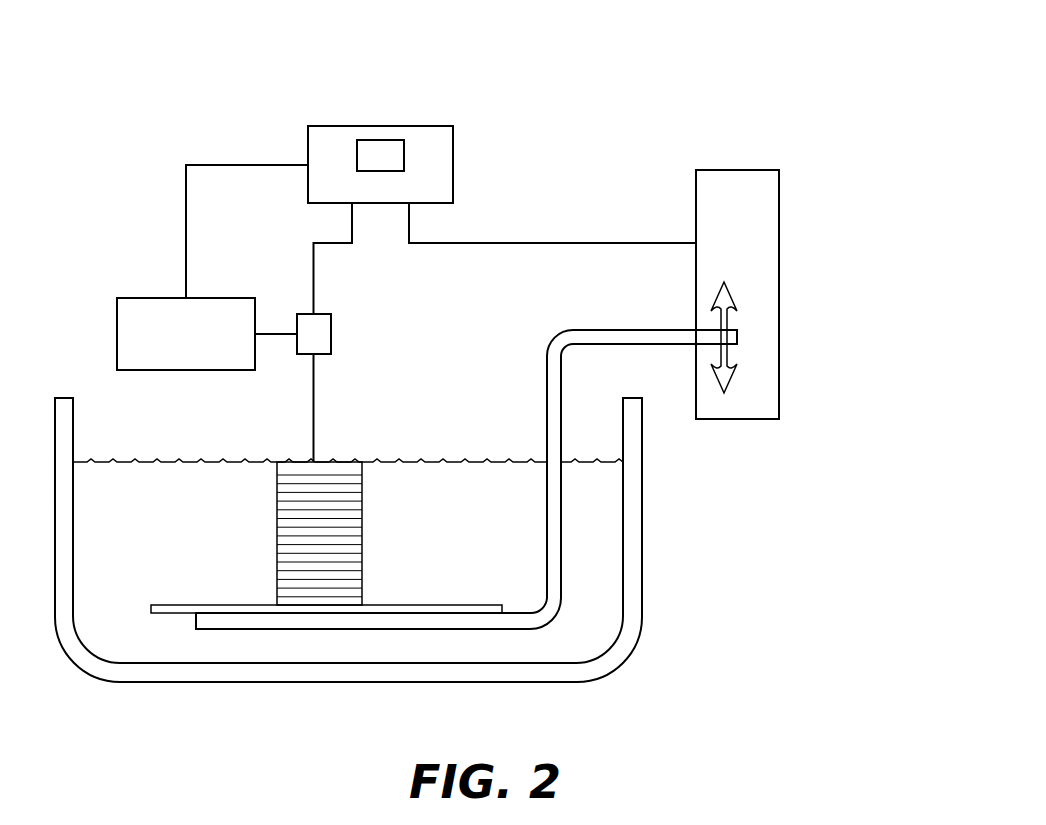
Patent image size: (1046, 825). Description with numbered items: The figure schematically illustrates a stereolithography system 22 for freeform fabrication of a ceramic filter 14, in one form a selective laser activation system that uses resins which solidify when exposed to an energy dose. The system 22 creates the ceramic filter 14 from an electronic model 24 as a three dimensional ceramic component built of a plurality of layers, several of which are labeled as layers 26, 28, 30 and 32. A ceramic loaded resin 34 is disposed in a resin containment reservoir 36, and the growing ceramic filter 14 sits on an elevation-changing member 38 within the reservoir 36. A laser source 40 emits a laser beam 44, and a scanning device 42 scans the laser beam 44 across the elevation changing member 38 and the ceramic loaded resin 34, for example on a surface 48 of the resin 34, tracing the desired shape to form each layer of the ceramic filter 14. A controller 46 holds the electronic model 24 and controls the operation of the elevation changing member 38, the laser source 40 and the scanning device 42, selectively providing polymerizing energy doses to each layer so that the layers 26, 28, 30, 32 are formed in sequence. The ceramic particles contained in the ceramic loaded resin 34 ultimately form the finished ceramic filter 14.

The stereolithography system 22 is at (750, 66).
The electronic model 24 is at (391, 140).
The controller 46 is at (414, 139).
The elevation-changing member 38 is at (781, 233).
The laser source 40 is at (147, 297).
The scanning device 42 is at (333, 326).
The laser beam 44 is at (306, 406).
The surface 48 is at (425, 460).
The ceramic filter 14 is at (341, 533).
The layer 26 is at (362, 557).
The layer 28 is at (362, 548).
The layer 30 is at (362, 540).
The layer 32 is at (362, 530).
The ceramic loaded resin 34 is at (597, 547).
The resin containment reservoir 36 is at (627, 663).